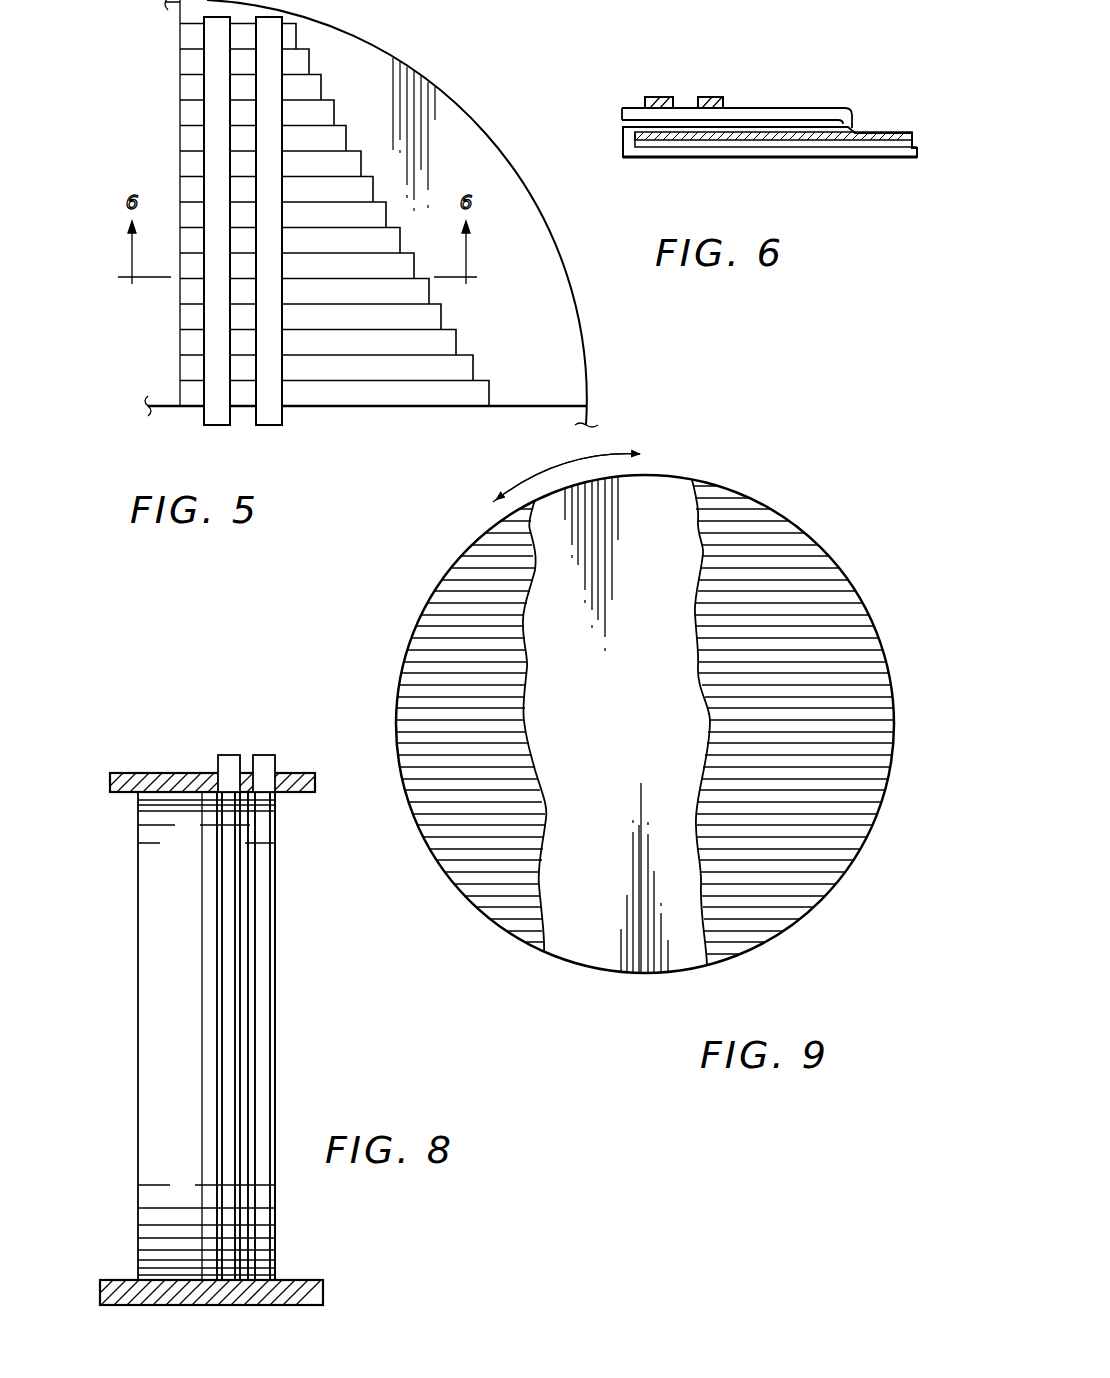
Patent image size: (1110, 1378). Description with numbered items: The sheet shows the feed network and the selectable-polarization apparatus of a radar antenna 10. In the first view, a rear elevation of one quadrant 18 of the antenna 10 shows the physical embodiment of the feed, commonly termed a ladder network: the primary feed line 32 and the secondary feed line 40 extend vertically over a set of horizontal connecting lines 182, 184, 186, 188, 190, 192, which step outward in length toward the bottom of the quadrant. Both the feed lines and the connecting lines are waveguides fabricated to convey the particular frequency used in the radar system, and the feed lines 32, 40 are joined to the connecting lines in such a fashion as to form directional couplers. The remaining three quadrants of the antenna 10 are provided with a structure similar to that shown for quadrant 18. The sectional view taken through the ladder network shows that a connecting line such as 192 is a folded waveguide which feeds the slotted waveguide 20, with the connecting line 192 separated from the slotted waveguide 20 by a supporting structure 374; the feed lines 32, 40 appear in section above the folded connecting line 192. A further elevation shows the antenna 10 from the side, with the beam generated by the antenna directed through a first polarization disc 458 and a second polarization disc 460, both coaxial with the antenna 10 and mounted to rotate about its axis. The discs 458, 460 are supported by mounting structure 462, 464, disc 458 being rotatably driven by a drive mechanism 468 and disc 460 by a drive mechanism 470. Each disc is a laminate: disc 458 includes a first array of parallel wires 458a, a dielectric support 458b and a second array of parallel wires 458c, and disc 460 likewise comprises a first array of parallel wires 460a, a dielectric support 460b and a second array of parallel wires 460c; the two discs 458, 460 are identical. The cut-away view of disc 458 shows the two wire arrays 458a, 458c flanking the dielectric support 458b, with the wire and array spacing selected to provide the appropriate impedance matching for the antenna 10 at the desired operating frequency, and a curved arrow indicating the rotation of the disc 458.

In FIG. 8, the antenna 10 is at (134, 857).
In FIG. 5, the quadrant 18 is at (427, 72).
In FIG. 6, the slotted waveguide 20 is at (845, 157).
In FIG. 5, the primary feed line 32 is at (216, 341).
In FIG. 6, the primary feed line 32 is at (652, 95).
In FIG. 5, the secondary feed line 40 is at (271, 393).
In FIG. 6, the secondary feed line 40 is at (708, 95).
In FIG. 5, the connecting line 182 is at (488, 393).
In FIG. 5, the connecting line 184 is at (461, 366).
In FIG. 5, the connecting line 186 is at (457, 343).
In FIG. 5, the connecting line 188 is at (432, 316).
In FIG. 5, the connecting line 190 is at (429, 293).
In FIG. 5, the connecting line 192 is at (400, 266).
In FIG. 6, the connecting line 192 is at (760, 107).
In FIG. 6, the supporting structure 374 is at (865, 130).
In FIG. 8, the first polarization disc 458 is at (214, 828).
In FIG. 9, the first polarization disc 458 is at (801, 503).
In FIG. 8, the first array of parallel wires 458a is at (220, 902).
In FIG. 9, the first array of parallel wires 458a is at (470, 632).
In FIG. 8, the dielectric support 458b is at (228, 945).
In FIG. 9, the dielectric support 458b is at (650, 512).
In FIG. 8, the second array of parallel wires 458c is at (240, 997).
In FIG. 9, the second array of parallel wires 458c is at (808, 592).
In FIG. 8, the second polarization disc 460 is at (278, 854).
In FIG. 8, the first array of parallel wires 460a is at (255, 895).
In FIG. 8, the dielectric support 460b is at (262, 932).
In FIG. 8, the second array of parallel wires 460c is at (275, 983).
In FIG. 8, the mounting structure 462 is at (290, 780).
In FIG. 8, the mounting structure 464 is at (300, 1282).
In FIG. 8, the drive mechanism 468 is at (222, 762).
In FIG. 8, the drive mechanism 470 is at (265, 762).